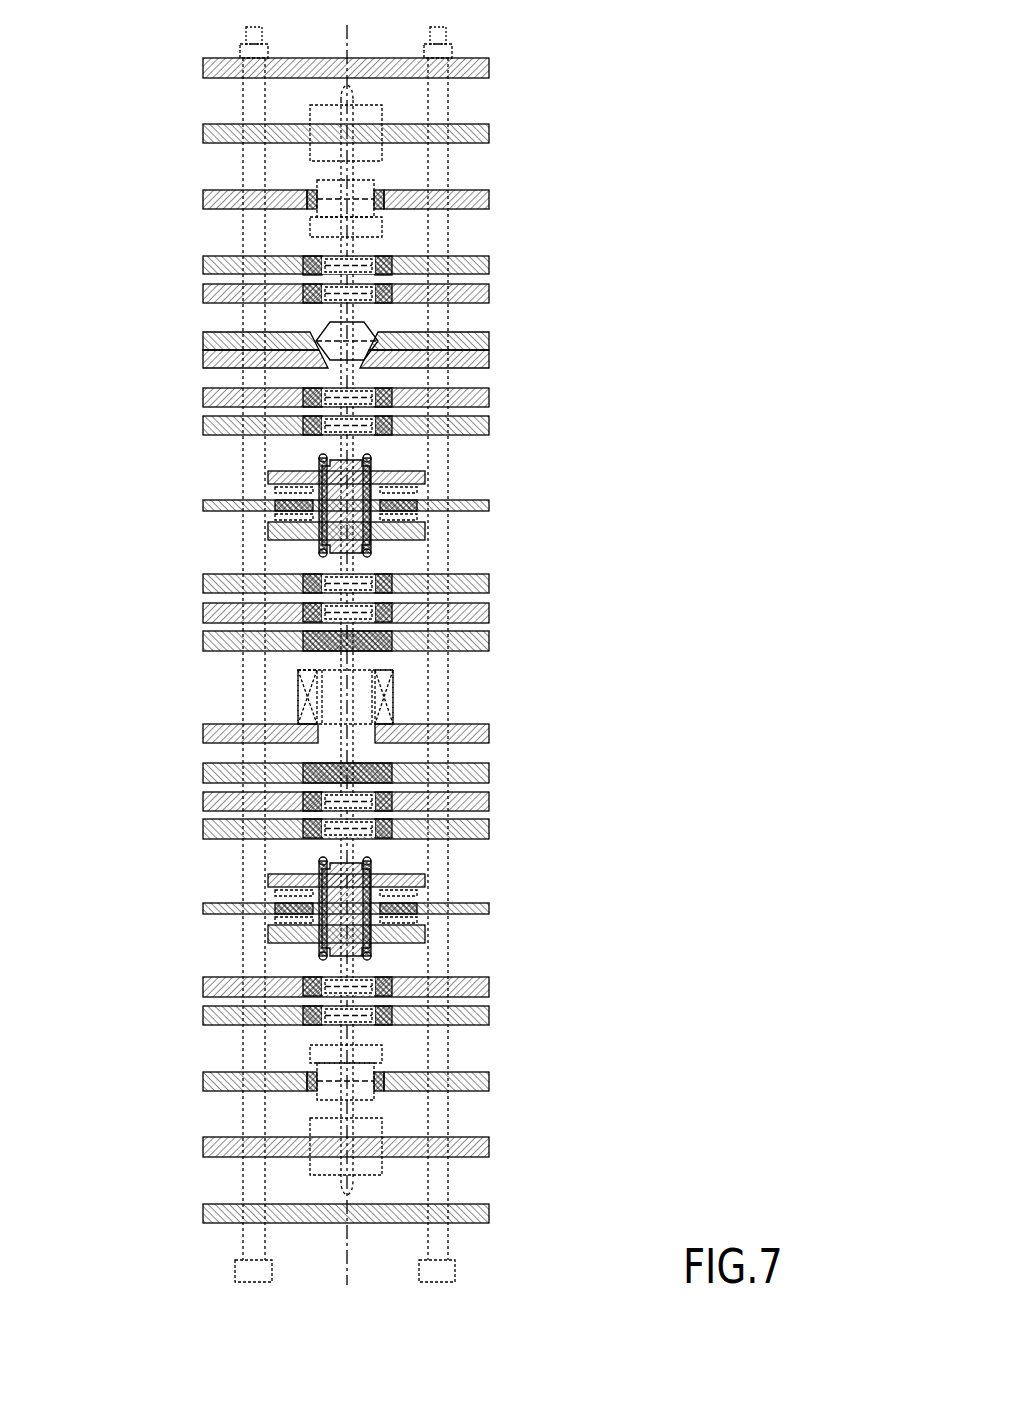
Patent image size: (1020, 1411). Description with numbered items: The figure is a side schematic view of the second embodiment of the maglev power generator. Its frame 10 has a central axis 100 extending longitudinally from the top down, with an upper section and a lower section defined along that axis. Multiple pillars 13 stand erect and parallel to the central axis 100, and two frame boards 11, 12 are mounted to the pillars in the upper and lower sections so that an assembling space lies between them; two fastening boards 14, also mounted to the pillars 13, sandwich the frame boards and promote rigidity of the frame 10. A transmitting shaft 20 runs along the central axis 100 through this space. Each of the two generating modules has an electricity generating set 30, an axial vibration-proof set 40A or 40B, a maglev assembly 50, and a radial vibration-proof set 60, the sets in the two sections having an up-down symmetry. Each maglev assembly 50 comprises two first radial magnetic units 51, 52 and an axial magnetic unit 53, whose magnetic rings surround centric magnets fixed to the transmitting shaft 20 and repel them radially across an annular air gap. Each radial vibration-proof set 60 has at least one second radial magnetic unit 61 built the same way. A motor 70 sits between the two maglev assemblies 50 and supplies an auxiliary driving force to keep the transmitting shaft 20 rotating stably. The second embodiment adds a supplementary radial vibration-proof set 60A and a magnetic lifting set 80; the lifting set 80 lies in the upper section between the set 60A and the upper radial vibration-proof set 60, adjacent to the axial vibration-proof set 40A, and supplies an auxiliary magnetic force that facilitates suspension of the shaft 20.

The frame 10 is at (500, 102).
The frame board 11 is at (203, 132).
The frame board 12 is at (203, 1147).
The pillars 13 is at (248, 1255).
The fastening boards 14 is at (203, 68).
The transmitting shaft 20 is at (358, 443).
The electricity generating set 30 is at (199, 483).
The axial vibration-proof set 40A is at (194, 194).
The axial vibration-proof set 40B is at (192, 1081).
The maglev assembly 50 is at (189, 608).
The first radial magnetic unit 51 is at (498, 585).
The first radial magnetic unit 52 is at (497, 614).
The axial magnetic unit 53 is at (497, 642).
The radial vibration-proof set 60 is at (194, 404).
The supplementary radial vibration-proof set 60A is at (194, 265).
The second radial magnetic unit 61 is at (497, 262).
The motor 70 is at (494, 721).
The magnetic lifting set 80 is at (195, 343).
The central axis 100 is at (352, 1262).